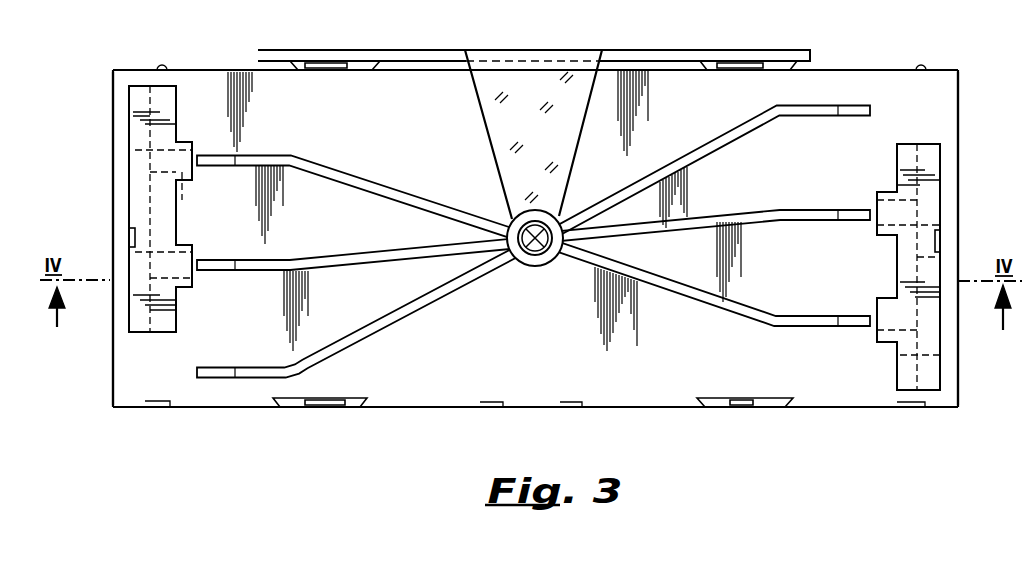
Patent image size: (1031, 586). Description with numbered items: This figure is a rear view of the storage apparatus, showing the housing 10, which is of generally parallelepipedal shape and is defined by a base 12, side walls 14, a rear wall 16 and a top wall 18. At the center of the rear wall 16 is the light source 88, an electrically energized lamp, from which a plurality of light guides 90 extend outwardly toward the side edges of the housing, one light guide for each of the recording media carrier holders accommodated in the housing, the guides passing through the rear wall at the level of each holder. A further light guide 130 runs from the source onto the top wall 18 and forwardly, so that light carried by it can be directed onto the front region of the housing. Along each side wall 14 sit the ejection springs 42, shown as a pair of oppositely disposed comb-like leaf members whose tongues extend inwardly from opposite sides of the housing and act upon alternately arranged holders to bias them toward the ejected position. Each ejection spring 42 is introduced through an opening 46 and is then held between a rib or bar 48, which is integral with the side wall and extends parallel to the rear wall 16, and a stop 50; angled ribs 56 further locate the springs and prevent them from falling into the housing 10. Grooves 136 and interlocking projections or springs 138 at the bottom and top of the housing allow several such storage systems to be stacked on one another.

The housing 10 is at (242, 407).
The base 12 is at (595, 409).
The side walls 14 is at (111, 380).
The rear wall 16 is at (422, 385).
The top wall 18 is at (226, 72).
The ejection springs 42 is at (143, 316).
The openings 46 is at (133, 88).
The rib or bar 48 is at (138, 151).
The stop 50 is at (130, 238).
The ribs 56 is at (173, 167).
The light source 88 is at (534, 249).
The light guides 90 is at (383, 187).
The further light guide 130 is at (426, 120).
The grooves 136 is at (351, 410).
The interlocking projections or springs 138 is at (356, 68).